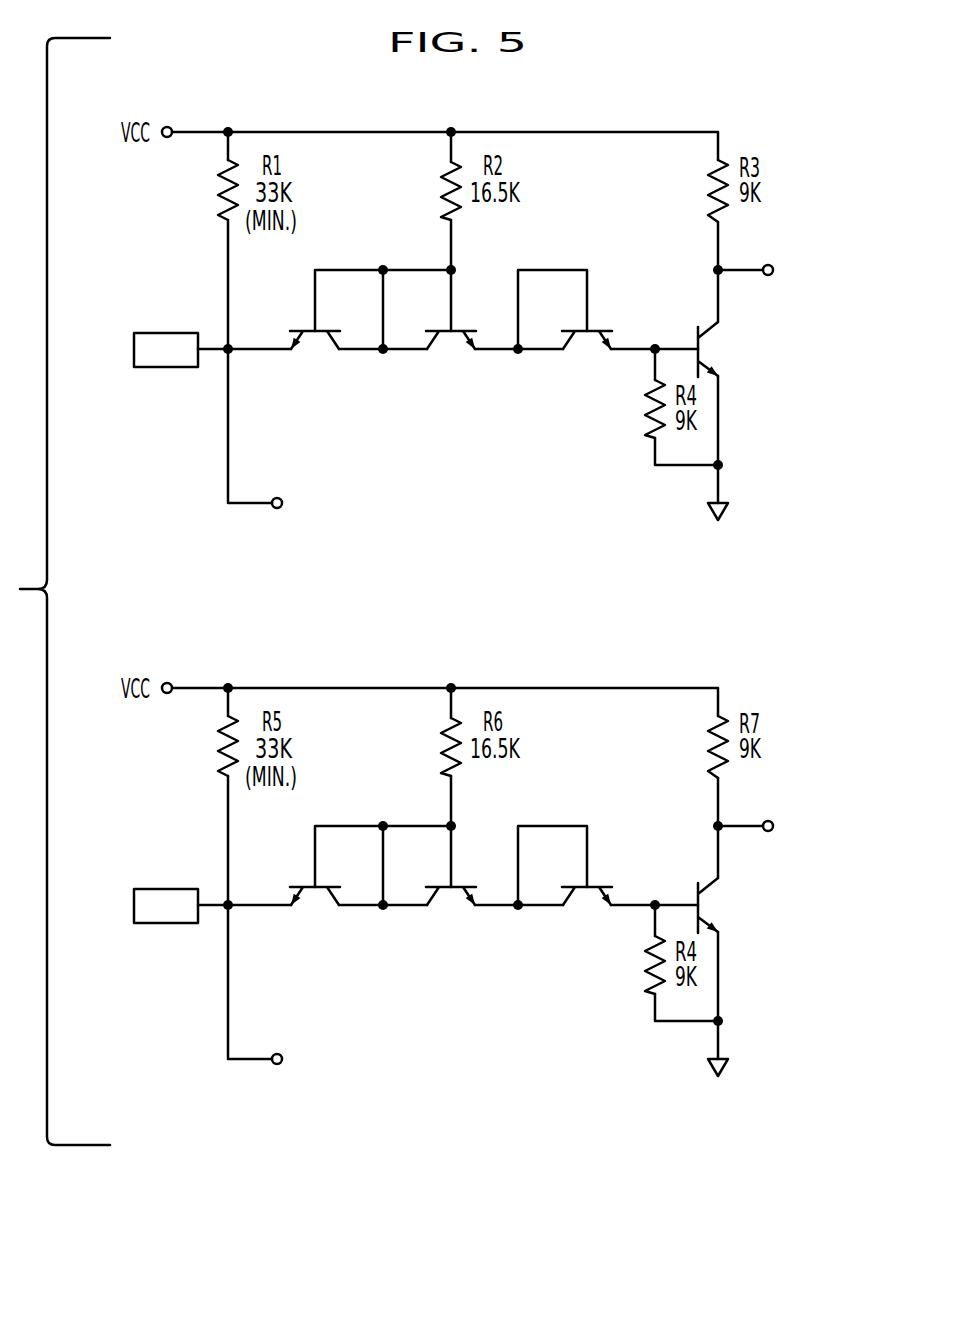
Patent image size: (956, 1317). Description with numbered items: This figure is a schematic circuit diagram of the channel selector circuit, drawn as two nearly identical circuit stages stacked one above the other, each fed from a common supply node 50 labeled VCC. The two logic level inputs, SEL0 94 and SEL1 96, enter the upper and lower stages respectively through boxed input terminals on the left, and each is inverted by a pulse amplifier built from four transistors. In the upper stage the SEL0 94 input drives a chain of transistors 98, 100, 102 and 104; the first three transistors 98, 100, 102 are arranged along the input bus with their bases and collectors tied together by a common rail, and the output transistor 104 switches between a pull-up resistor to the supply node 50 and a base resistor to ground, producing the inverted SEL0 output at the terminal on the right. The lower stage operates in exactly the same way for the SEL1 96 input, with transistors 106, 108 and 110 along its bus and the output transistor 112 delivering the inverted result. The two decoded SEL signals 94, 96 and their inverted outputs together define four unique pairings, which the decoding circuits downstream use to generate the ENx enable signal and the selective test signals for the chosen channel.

The VCC supply terminal 50 is at (171, 126).
The SEL0 94 is at (157, 332).
The SEL1 96 is at (481, 938).
The transistor 98 is at (318, 410).
The transistor 100 is at (454, 410).
The transistor 102 is at (590, 410).
The transistor 104 is at (715, 325).
The transistor 106 is at (327, 954).
The transistor 108 is at (460, 954).
The transistor 110 is at (596, 954).
The transistor 112 is at (716, 882).